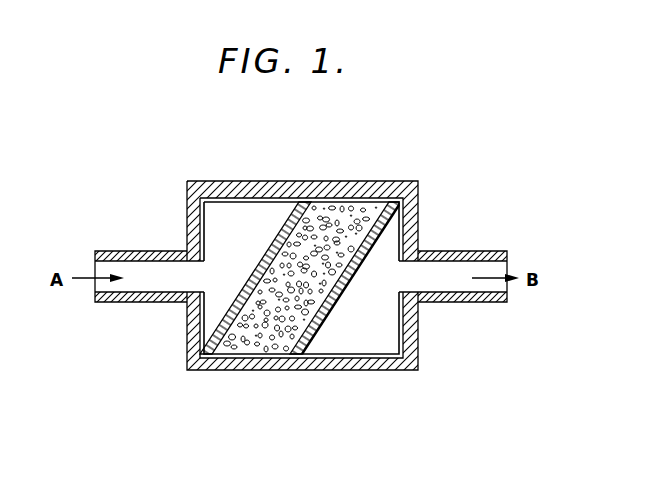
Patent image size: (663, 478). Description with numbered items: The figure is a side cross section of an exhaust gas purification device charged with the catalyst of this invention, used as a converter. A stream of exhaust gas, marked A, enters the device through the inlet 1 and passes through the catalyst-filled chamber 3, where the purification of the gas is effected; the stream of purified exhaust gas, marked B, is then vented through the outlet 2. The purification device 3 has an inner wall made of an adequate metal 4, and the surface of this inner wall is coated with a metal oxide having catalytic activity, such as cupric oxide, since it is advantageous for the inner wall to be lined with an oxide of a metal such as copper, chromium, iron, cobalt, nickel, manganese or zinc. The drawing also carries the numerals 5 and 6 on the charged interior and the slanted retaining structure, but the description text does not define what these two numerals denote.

The exhaust gas inlet 1 is at (139, 250).
The purified gas outlet 2 is at (465, 252).
The catalyst-filled chamber 3 is at (330, 204).
The inner wall metal 4 is at (358, 350).
The granular filter material 5 is at (352, 218).
The inlet chamber with perforated support 6 is at (279, 228).